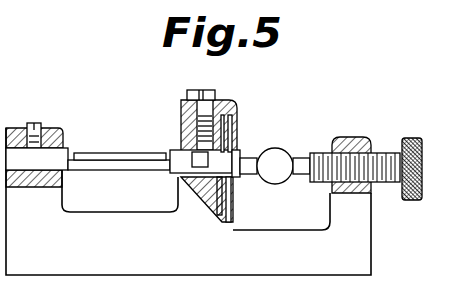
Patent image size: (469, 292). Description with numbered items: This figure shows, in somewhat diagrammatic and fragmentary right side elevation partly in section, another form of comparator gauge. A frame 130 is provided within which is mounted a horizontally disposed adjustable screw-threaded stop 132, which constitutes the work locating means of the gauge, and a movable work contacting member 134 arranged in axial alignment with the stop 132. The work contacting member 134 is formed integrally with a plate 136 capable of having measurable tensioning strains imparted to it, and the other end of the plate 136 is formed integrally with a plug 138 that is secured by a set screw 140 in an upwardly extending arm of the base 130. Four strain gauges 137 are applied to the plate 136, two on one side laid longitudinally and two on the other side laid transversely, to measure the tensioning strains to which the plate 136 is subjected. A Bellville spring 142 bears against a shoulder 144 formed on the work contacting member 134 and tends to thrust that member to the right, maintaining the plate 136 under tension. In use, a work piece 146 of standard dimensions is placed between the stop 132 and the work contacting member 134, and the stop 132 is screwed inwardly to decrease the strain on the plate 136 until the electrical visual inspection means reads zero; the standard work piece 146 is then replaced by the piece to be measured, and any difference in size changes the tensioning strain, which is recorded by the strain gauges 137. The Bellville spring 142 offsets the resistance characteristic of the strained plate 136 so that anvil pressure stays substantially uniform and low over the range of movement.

The frame 130 is at (188, 201).
The adjustable screw-threaded stop 132 is at (321, 153).
The work contacting member 134 is at (175, 152).
The plate 136 is at (133, 148).
The strain gauges 137 is at (107, 165).
The plug 138 is at (63, 155).
The set screw 140 is at (33, 130).
The Bellville spring 142 is at (232, 130).
The shoulder 144 is at (236, 157).
The work piece 146 is at (280, 182).